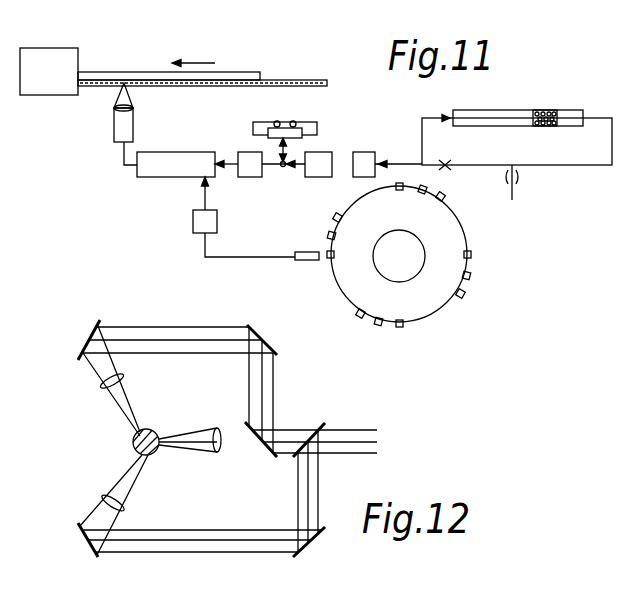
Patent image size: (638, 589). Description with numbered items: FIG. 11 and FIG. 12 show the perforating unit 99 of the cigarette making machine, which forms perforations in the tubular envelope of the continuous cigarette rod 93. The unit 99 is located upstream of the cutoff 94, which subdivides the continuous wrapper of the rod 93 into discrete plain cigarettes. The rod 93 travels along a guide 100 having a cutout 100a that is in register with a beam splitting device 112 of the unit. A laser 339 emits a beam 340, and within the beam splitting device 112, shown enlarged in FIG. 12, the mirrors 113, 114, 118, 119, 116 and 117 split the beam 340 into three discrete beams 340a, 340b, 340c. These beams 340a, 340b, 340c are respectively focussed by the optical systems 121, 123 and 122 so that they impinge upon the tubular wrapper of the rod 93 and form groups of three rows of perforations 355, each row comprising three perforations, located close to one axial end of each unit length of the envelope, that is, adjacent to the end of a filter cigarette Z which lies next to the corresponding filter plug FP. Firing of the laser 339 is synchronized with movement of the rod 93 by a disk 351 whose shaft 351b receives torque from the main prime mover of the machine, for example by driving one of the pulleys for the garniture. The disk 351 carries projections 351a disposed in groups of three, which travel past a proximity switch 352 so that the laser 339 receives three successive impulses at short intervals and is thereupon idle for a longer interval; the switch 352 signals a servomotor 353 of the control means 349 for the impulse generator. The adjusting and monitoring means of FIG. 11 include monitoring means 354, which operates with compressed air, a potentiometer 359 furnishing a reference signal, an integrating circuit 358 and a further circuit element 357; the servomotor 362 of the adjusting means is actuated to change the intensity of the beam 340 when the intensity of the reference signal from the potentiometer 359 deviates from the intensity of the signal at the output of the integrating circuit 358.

In FIG. 11, the cutoff 94 is at (50, 63).
In FIG. 11, the cigarette rod 93 is at (127, 78).
In FIG. 12, the cigarette rod 93 is at (154, 432).
In FIG. 11, the guide 100 is at (284, 80).
In FIG. 11, the cutout 100a is at (130, 84).
In FIG. 11, the beam splitting device 112 is at (115, 127).
In FIG. 12, the beam splitting device 112 is at (91, 432).
In FIG. 11, the beam 340 is at (127, 151).
In FIG. 12, the beam 340 is at (364, 428).
In FIG. 12, the discrete beam 340a is at (226, 428).
In FIG. 12, the discrete beam 340b is at (217, 327).
In FIG. 12, the discrete beam 340c is at (205, 560).
In FIG. 11, the laser 339 is at (153, 178).
In FIG. 11, the servomotor 362 is at (248, 178).
In FIG. 11, the integrating circuit 358 is at (311, 178).
In FIG. 11, the potentiometer 359 is at (318, 126).
In FIG. 11, the signal generator 357 is at (365, 152).
In FIG. 11, the monitoring means 354 is at (577, 174).
In FIG. 11, the perforations 355 is at (545, 110).
In FIG. 11, the pulse generator 353 is at (193, 226).
In FIG. 11, the signal path 349 is at (218, 266).
In FIG. 11, the perforating unit 99 is at (102, 191).
In FIG. 11, the proximity sensor 352 is at (305, 261).
In FIG. 11, the disk 351 is at (444, 234).
In FIG. 11, the projections 351a is at (473, 281).
In FIG. 11, the shaft 351b is at (410, 264).
In FIG. 11, the filter cigarette Z is at (481, 118).
In FIG. 11, the filter plug FP is at (575, 120).
In FIG. 12, the mirror 119 is at (95, 328).
In FIG. 12, the optical system 123 is at (102, 383).
In FIG. 12, the mirror 118 is at (278, 343).
In FIG. 12, the mirror 114 is at (271, 462).
In FIG. 12, the optical system 121 is at (218, 454).
In FIG. 12, the mirror 113 is at (322, 421).
In FIG. 12, the mirror 116 is at (320, 540).
In FIG. 12, the mirror 117 is at (81, 541).
In FIG. 12, the optical system 122 is at (126, 506).